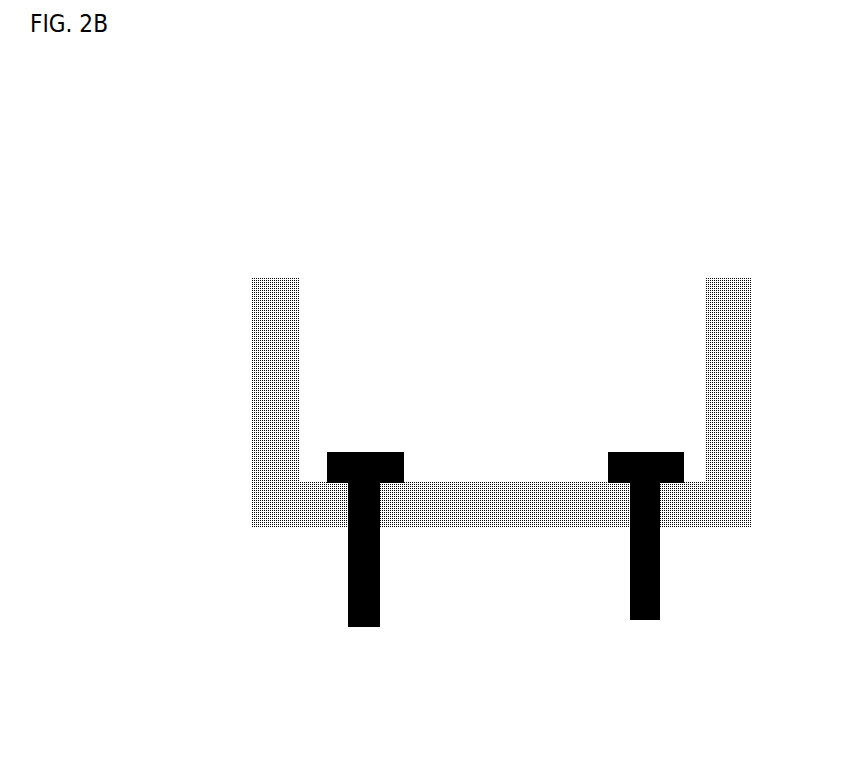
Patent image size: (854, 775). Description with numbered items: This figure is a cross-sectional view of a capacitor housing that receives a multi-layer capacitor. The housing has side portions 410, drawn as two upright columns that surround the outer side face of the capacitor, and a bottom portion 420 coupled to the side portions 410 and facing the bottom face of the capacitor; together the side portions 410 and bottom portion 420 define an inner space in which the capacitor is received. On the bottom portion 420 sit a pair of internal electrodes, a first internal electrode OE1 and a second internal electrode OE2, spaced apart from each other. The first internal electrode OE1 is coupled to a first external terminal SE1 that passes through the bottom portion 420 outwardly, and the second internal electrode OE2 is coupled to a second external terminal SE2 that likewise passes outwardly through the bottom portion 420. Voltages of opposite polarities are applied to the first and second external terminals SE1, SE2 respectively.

The side portions 410 is at (283, 305).
The bottom portion 420 is at (325, 510).
The first internal electrode OE1 is at (395, 472).
The second internal electrode OE2 is at (662, 475).
The first external terminal SE1 is at (368, 608).
The second external terminal SE2 is at (645, 608).